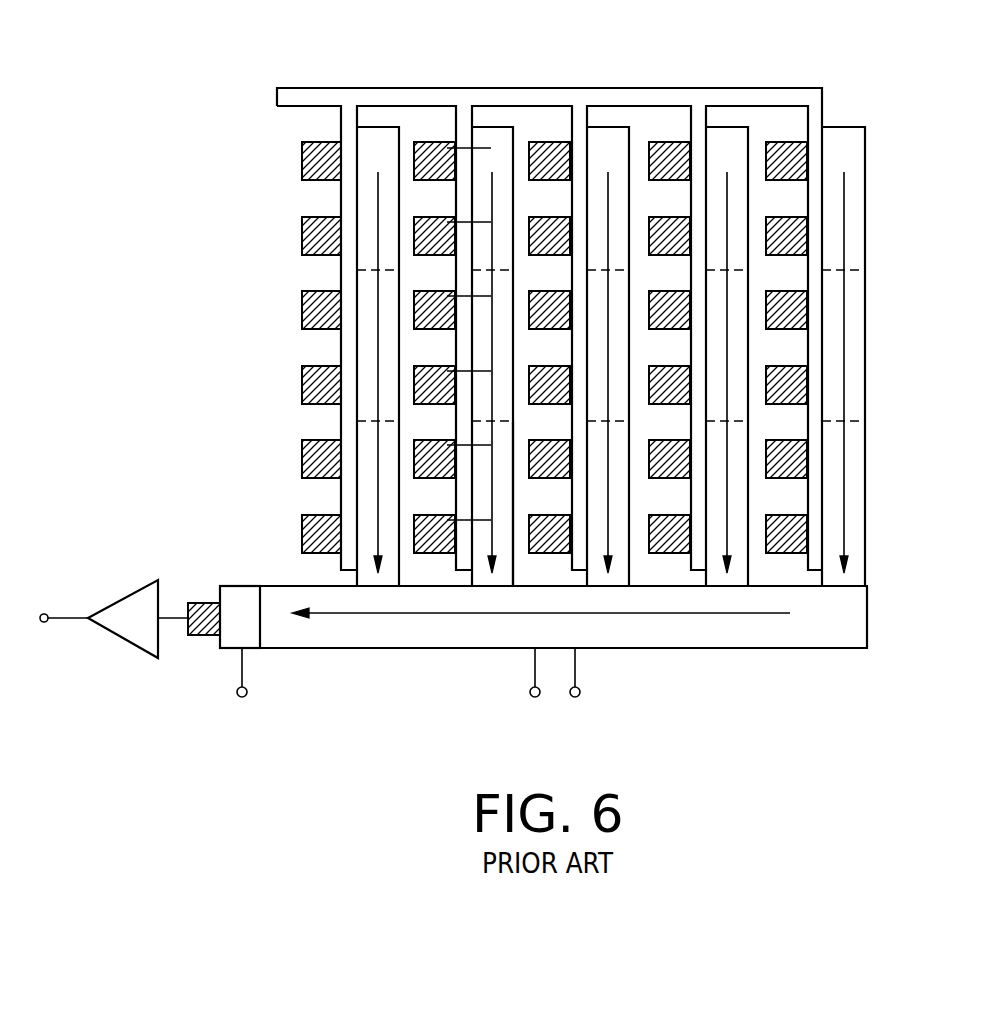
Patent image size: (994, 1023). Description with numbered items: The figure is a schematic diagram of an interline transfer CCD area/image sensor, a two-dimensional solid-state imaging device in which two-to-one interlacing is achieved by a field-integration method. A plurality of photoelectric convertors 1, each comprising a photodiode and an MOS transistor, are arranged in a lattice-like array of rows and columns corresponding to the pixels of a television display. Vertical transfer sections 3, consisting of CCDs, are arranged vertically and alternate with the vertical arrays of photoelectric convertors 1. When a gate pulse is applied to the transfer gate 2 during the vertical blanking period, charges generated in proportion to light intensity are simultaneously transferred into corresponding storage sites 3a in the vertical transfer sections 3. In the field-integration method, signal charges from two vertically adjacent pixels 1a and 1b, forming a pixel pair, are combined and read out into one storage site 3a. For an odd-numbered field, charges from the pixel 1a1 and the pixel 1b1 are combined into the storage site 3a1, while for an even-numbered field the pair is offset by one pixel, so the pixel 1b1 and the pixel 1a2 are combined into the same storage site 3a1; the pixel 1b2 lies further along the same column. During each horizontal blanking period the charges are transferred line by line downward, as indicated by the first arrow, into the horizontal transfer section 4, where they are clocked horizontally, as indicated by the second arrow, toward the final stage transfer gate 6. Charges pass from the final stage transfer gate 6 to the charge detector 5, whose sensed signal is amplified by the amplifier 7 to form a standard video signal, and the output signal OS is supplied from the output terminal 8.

The photoelectric convertor 1 is at (302, 167).
The pixel 1a is at (447, 217).
The pixel 1b is at (447, 142).
The pixel 1a1 is at (455, 515).
The pixel 1a2 is at (455, 366).
The pixel 1b1 is at (455, 440).
The pixel 1b2 is at (455, 291).
The transfer gate 2 is at (569, 88).
The vertical transfer section 3 is at (375, 116).
The storage site 3a is at (858, 186).
The storage site 3a1 is at (510, 490).
The horizontal transfer section 4 is at (485, 645).
The charge detector 5 is at (202, 602).
The final stage transfer gate 6 is at (246, 652).
The amplifier 7 is at (132, 592).
The output terminal 8 is at (45, 613).